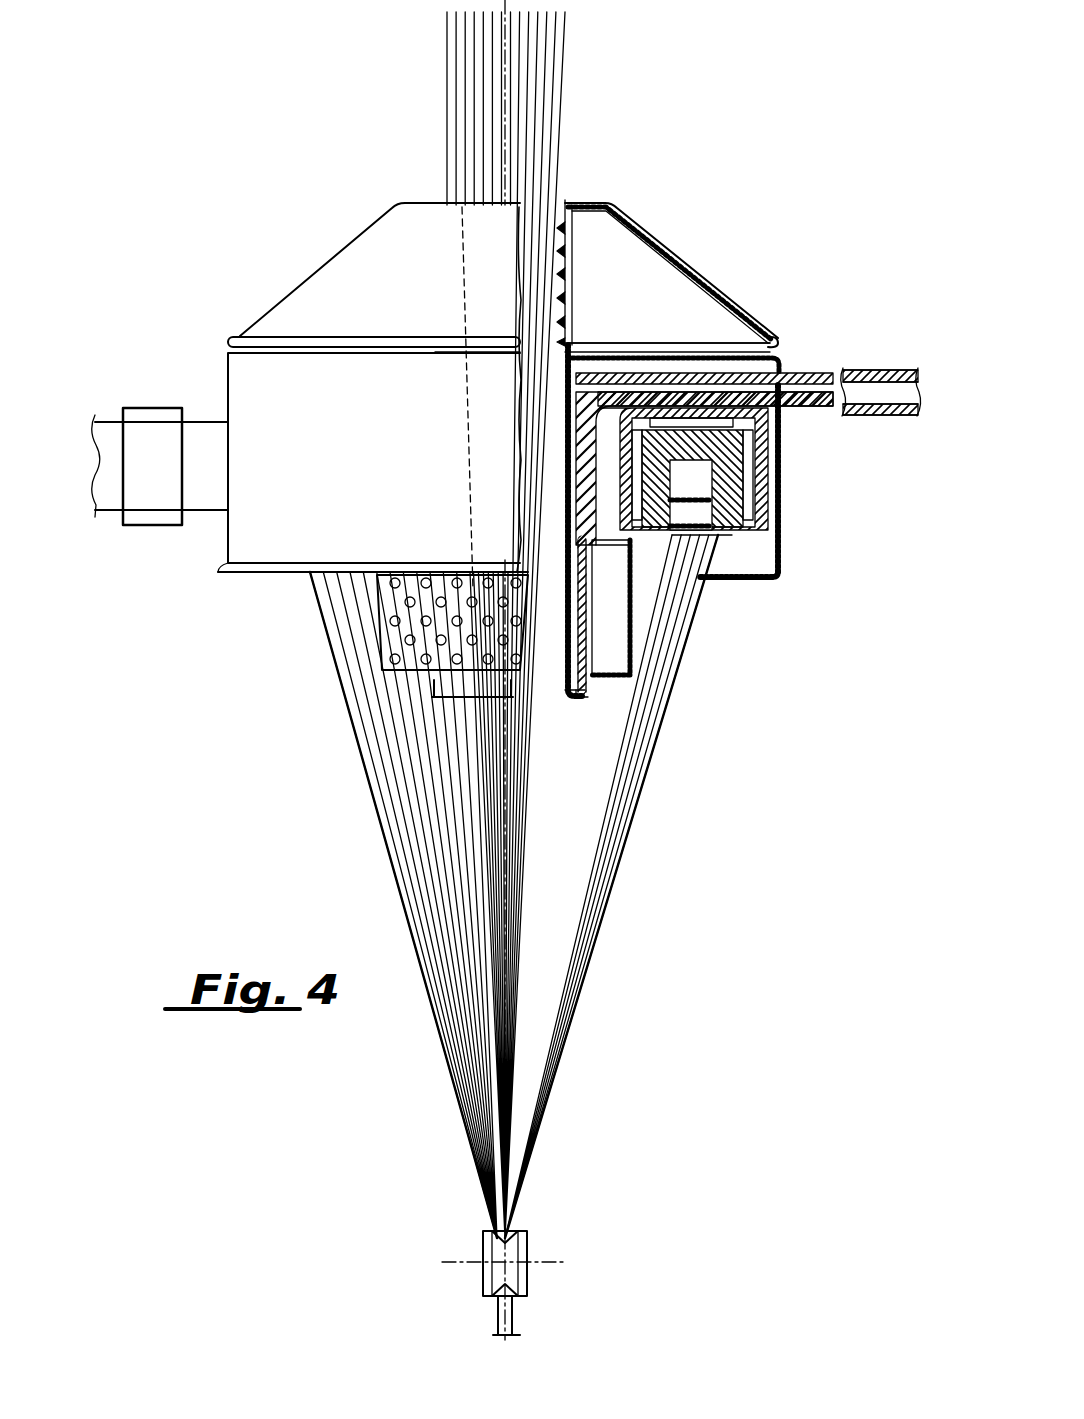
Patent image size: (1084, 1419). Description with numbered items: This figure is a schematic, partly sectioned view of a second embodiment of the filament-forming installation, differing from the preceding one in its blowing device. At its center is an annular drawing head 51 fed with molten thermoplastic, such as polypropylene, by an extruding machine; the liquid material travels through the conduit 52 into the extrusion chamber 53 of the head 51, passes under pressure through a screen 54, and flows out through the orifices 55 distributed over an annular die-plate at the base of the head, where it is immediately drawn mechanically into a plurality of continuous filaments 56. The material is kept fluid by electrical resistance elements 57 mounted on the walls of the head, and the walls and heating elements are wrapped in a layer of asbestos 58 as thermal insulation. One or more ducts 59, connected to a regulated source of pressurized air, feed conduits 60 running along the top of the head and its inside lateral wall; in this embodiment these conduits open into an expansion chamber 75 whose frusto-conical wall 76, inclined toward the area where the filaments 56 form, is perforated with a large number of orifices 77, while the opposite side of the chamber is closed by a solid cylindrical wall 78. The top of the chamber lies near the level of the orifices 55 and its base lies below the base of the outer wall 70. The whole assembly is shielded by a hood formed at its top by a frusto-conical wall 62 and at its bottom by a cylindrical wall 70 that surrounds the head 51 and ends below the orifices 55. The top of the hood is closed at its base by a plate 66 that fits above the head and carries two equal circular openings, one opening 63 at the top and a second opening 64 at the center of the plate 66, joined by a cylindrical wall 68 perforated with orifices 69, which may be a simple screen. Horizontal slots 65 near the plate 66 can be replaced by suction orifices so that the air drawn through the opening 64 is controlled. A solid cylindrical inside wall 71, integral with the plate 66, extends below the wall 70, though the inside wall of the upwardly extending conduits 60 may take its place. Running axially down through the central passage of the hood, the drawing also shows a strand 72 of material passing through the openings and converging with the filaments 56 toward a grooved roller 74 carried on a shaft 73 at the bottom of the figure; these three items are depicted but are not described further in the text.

The annular drawing head 51 is at (782, 592).
The conduit 52 is at (110, 420).
The extrusion chamber 53 is at (700, 478).
The screen 54 is at (698, 540).
The orifices 55 is at (690, 545).
The continuous filaments 56 is at (350, 722).
The electrical resistance elements 57 is at (740, 432).
The layer of asbestos 58 is at (760, 500).
The duct 59 is at (886, 372).
The conduits 60 is at (826, 374).
The frusto-conical wall 62 is at (330, 278).
The circular opening 63 is at (562, 205).
The circular opening 64 is at (550, 352).
The horizontal slots 65 is at (230, 343).
The plate 66 is at (681, 356).
The cylindrical wall 68 is at (572, 300).
The orifices 69 is at (572, 262).
The cylindrical wall 70 is at (235, 540).
The inside wall 71 is at (580, 698).
The fiber strand 72 is at (458, 100).
The pulley shaft 73 is at (508, 1322).
The pulley 74 is at (515, 1252).
The expansion chamber 75 is at (606, 642).
The frusto-conical wall 76 is at (632, 625).
The orifices 77 is at (447, 593).
The solid wall 78 is at (572, 688).